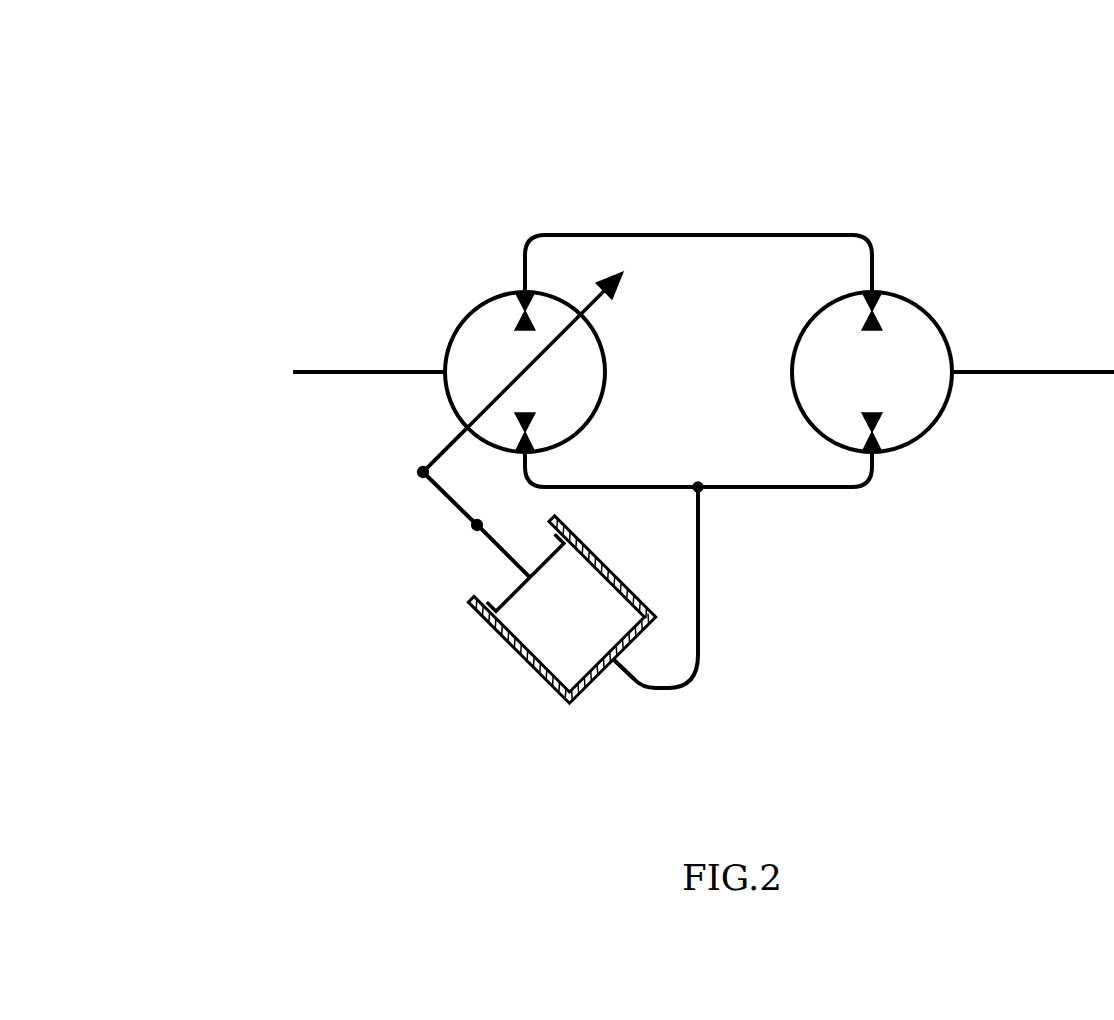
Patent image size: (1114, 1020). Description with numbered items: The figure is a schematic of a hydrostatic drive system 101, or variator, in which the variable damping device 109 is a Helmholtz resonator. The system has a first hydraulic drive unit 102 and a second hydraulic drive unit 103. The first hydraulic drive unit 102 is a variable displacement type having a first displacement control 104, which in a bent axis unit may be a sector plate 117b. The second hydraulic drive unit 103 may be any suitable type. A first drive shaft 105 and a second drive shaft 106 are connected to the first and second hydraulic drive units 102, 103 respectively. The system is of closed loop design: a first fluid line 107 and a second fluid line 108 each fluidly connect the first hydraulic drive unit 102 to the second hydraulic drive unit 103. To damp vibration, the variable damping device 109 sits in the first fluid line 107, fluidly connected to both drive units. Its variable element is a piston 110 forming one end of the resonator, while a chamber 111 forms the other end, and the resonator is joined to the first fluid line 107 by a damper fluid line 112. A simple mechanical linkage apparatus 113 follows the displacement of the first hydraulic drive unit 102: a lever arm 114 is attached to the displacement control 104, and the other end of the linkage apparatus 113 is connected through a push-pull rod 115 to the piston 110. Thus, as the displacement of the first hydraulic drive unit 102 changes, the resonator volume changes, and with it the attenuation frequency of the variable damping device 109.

The hydrostatic drive system 101 is at (247, 98).
The first hydraulic drive unit 102 is at (450, 330).
The second hydraulic drive unit 103 is at (920, 306).
The first displacement control 104 is at (583, 310).
The first drive shaft 105 is at (358, 371).
The second drive shaft 106 is at (1038, 371).
The first fluid line 107 is at (798, 488).
The second fluid line 108 is at (734, 234).
The variable damping device 109 is at (416, 633).
The piston 110 is at (504, 551).
The chamber 111 is at (561, 609).
The damper fluid line 112 is at (701, 658).
The mechanical linkage apparatus 113 is at (302, 487).
The lever arm 114 is at (446, 446).
The push-pull rod 115 is at (447, 498).
The sector plate 117b is at (575, 377).